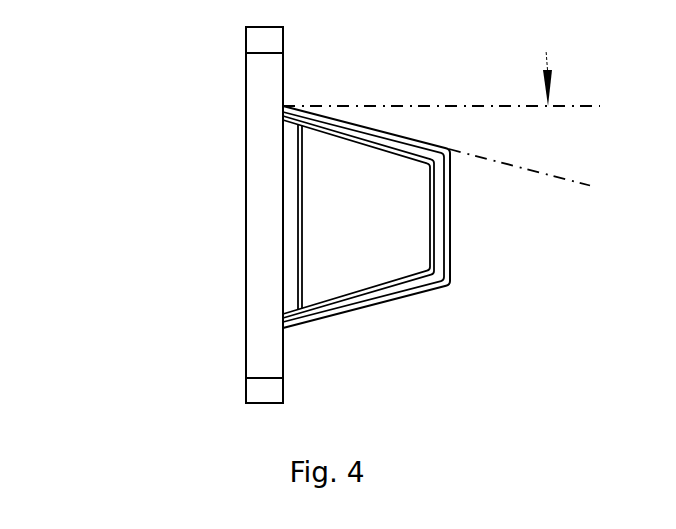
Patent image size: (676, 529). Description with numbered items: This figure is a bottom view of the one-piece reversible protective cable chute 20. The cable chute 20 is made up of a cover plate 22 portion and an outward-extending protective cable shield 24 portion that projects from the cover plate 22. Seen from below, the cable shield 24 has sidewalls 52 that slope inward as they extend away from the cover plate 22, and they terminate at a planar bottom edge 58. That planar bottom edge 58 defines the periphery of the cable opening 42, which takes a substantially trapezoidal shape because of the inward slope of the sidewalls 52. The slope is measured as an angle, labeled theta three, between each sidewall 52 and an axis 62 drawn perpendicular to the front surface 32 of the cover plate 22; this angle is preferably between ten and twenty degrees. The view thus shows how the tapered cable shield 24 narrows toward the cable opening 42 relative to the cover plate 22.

The protective cable chute 20 is at (186, 138).
The cover plate 22 is at (262, 211).
The protective cable shield 24 is at (450, 253).
The front surface 32 is at (284, 78).
The cable opening 42 is at (378, 225).
The sidewalls 52 is at (364, 125).
The planar bottom edge 58 is at (370, 304).
The axis 62 is at (473, 106).